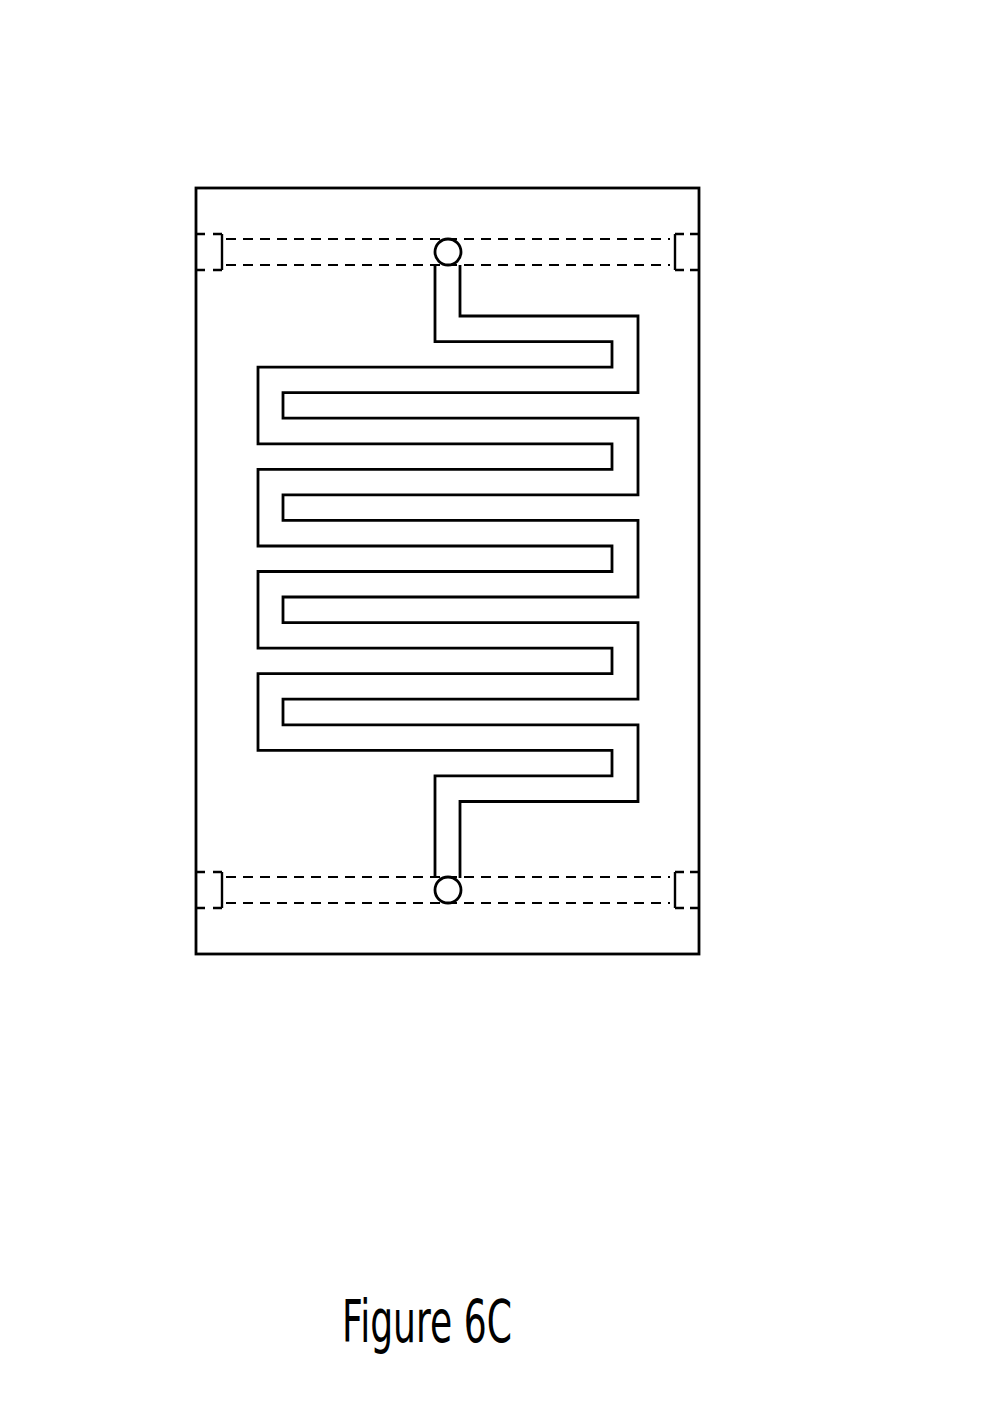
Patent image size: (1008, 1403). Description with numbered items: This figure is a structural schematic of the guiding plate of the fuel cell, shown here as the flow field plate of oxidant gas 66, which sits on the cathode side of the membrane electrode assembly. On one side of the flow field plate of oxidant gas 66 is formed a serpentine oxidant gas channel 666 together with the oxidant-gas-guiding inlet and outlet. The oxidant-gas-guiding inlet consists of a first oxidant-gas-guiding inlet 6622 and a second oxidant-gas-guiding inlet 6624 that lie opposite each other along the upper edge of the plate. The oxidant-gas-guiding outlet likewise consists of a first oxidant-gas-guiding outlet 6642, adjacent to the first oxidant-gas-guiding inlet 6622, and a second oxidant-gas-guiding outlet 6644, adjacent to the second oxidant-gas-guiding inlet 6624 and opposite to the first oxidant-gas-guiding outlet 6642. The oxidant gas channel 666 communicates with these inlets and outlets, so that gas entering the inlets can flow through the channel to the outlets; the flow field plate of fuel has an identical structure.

The flow field plate of oxidant gas 66 is at (163, 45).
The oxidant gas channel 666 is at (619, 575).
The first oxidant-gas-guiding inlet 6622 is at (202, 252).
The second oxidant-gas-guiding inlet 6624 is at (690, 255).
The first oxidant-gas-guiding outlet 6642 is at (202, 890).
The second oxidant-gas-guiding outlet 6644 is at (683, 893).